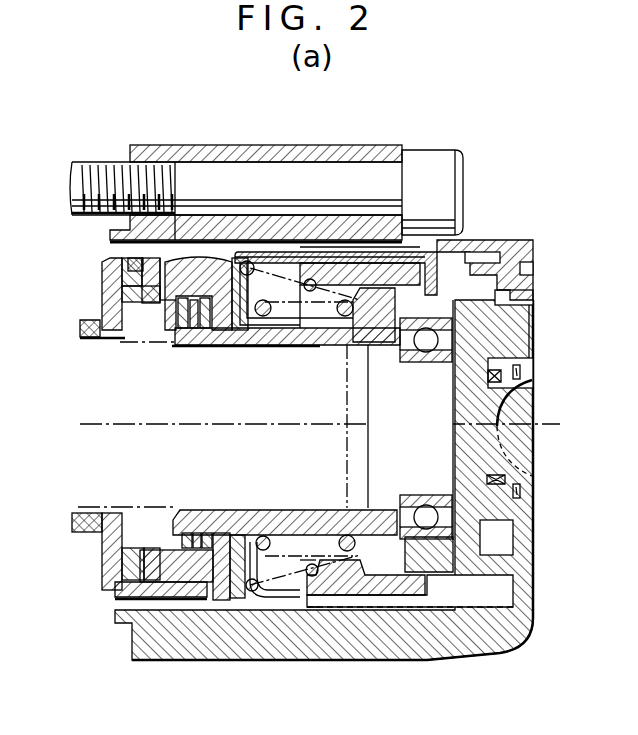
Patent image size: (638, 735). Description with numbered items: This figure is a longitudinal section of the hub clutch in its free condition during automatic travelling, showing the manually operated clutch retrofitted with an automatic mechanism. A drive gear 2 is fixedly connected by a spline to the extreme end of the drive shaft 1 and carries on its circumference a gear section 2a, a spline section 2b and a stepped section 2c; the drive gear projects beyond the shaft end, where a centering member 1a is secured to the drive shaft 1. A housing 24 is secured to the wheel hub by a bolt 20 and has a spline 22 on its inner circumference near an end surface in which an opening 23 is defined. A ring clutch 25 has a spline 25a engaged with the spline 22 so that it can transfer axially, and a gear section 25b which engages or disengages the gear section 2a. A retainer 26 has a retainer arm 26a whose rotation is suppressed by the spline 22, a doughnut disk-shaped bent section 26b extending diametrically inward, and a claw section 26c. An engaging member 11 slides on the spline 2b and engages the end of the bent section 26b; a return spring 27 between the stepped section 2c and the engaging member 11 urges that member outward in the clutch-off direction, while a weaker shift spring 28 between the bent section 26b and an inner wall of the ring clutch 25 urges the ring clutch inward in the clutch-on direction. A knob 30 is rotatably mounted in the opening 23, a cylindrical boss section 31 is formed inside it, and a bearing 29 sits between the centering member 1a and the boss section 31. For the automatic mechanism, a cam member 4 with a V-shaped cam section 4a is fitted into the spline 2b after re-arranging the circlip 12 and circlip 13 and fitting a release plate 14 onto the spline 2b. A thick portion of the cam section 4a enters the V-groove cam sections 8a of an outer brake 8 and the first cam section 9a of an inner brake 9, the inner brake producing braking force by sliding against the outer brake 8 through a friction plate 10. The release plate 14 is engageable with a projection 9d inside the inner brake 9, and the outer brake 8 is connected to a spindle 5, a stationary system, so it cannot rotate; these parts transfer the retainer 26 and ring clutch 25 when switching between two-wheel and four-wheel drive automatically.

The drive shaft 1 is at (100, 478).
The centering member 1a is at (380, 440).
The drive gear 2 is at (330, 335).
The gear section 2a is at (392, 345).
The spline section 2b is at (292, 325).
The stepped section 2c is at (369, 350).
The cam member 4 is at (215, 245).
The cam section 4a is at (190, 260).
The spindle 5 is at (95, 337).
The outer brake 8 is at (103, 310).
The cam sections 8a is at (150, 262).
The inner brake 9 is at (150, 300).
The first cam section 9a is at (158, 262).
The projection 9d is at (156, 305).
The friction plate 10 is at (115, 258).
The engaging member 11 is at (242, 325).
The circlip 12 is at (180, 300).
The circlip 13 is at (200, 326).
The release plate 14 is at (192, 320).
The bolt 20 is at (440, 163).
The spline 22 is at (470, 262).
The opening 23 is at (532, 383).
The housing 24 is at (522, 247).
The ring clutch 25 is at (320, 278).
The spline 25a is at (320, 600).
The gear section 25b is at (335, 325).
The retainer 26 is at (352, 250).
The retainer arm 26a is at (305, 200).
The bent section 26b is at (265, 262).
The claw section 26c is at (530, 268).
The return spring 27 is at (348, 330).
The shift spring 28 is at (290, 258).
The bearing 29 is at (500, 372).
The knob 30 is at (475, 465).
The boss section 31 is at (432, 322).